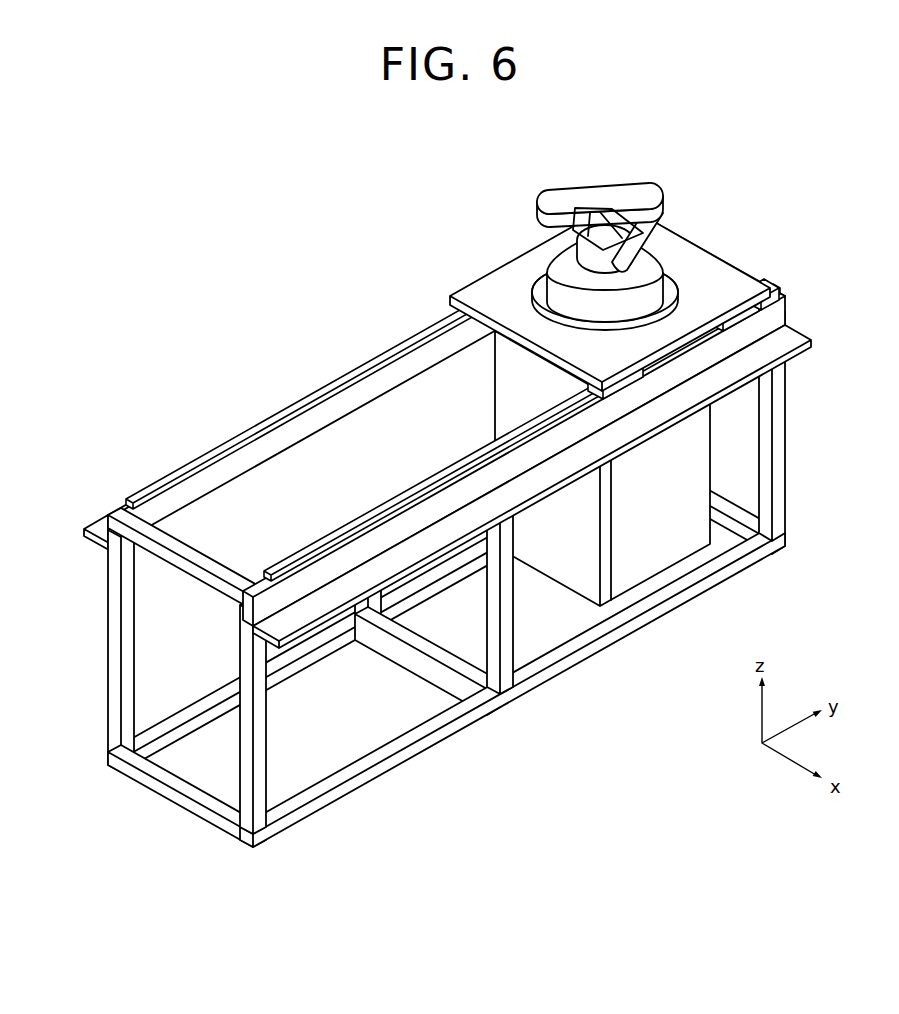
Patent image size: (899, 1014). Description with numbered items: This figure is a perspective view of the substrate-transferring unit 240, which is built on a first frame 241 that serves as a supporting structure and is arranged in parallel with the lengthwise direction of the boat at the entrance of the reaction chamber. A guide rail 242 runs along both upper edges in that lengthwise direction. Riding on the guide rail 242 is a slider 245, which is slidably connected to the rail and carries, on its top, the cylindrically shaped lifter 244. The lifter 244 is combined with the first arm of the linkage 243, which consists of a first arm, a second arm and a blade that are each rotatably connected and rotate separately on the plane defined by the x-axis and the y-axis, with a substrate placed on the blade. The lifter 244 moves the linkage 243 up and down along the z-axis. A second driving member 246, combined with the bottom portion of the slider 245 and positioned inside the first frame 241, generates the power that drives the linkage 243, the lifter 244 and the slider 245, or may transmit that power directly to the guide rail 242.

The substrate-transferring unit 240 is at (459, 491).
The first frame 241 is at (459, 530).
The guide rail 242 is at (194, 460).
The linkage 243 is at (656, 188).
The lifter 244 is at (672, 244).
The slider 245 is at (717, 300).
The second driving member 246 is at (699, 454).